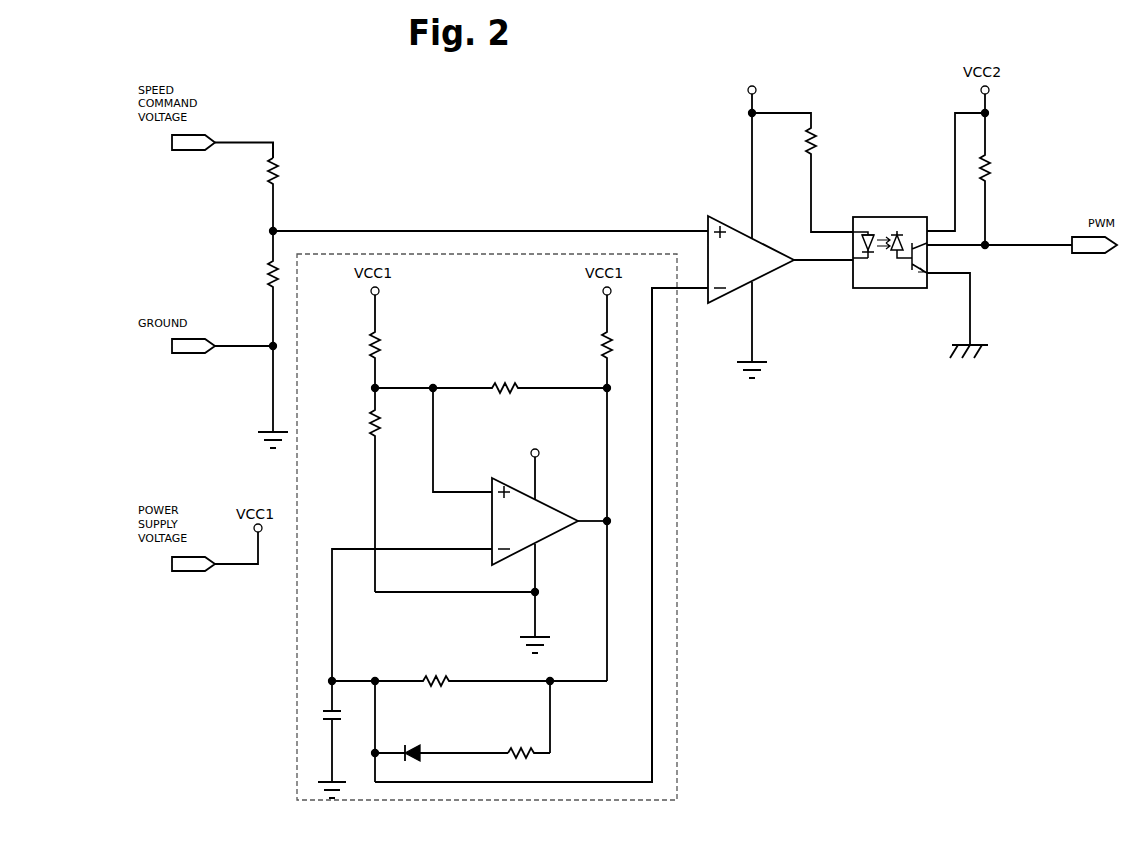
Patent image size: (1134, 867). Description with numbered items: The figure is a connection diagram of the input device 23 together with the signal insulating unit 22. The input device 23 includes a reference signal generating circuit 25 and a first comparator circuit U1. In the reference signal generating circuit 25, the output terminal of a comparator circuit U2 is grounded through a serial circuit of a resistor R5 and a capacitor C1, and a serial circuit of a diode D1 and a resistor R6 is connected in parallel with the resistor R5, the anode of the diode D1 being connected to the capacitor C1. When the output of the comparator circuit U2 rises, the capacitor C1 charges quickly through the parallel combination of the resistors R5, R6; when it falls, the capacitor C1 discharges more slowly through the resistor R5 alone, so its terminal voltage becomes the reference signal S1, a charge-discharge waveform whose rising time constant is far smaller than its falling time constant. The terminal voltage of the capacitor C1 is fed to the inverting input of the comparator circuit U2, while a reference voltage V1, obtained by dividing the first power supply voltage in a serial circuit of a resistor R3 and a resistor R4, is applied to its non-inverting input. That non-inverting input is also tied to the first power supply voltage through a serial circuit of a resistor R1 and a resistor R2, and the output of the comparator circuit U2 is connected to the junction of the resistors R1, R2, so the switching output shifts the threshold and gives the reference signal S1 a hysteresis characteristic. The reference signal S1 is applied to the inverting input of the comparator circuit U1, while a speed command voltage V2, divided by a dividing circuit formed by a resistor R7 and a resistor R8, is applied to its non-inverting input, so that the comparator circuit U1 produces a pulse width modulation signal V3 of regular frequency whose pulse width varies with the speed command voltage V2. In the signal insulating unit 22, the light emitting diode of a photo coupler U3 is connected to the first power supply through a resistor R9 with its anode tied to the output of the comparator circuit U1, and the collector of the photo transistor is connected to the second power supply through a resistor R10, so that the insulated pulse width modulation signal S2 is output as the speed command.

The signal insulating unit 22 is at (890, 266).
The input device 23 is at (860, 432).
The reference signal generating circuit 25 is at (678, 690).
The reference voltage V1 is at (433, 425).
The speed command voltage V2 is at (250, 142).
The pulse width modulation signal V3 is at (812, 262).
The reference signal S1 is at (603, 780).
The pulse width modulation signal S2 is at (1028, 248).
The resistor R1 is at (491, 377).
The resistor R2 is at (593, 341).
The resistor R3 is at (388, 341).
The resistor R4 is at (388, 490).
The resistor R5 is at (469, 670).
The resistor R6 is at (529, 742).
The resistor R7 is at (258, 194).
The resistor R8 is at (258, 288).
The resistor R9 is at (802, 172).
The resistor R10 is at (1004, 179).
The capacitor C1 is at (324, 738).
The diode D1 is at (441, 744).
The first comparator circuit U1 is at (747, 221).
The comparator circuit U2 is at (471, 555).
The photo coupler U3 is at (890, 241).